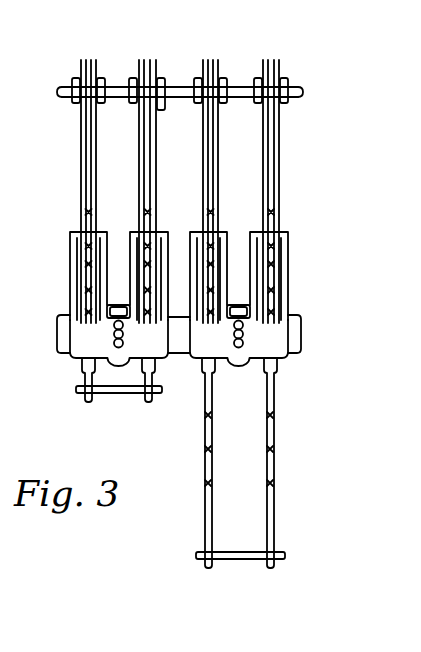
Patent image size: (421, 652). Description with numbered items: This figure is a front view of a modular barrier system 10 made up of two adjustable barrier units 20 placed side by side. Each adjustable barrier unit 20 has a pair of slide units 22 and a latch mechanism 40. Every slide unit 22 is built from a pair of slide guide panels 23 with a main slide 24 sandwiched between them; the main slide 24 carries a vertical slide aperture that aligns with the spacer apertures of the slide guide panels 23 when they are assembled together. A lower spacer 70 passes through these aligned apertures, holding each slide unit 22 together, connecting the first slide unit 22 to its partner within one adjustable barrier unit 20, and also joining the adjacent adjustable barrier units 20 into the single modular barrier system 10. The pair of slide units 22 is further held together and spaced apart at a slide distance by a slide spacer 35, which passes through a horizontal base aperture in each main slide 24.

The modular barrier system 10 is at (305, 43).
The adjustable barrier unit 20 is at (155, 50).
The slide unit 22 is at (80, 177).
The slide guide panel 23 is at (280, 150).
The main slide 24 is at (274, 502).
The slide spacer 35 is at (237, 560).
The latch mechanism 40 is at (82, 336).
The lower spacer 70 is at (302, 337).